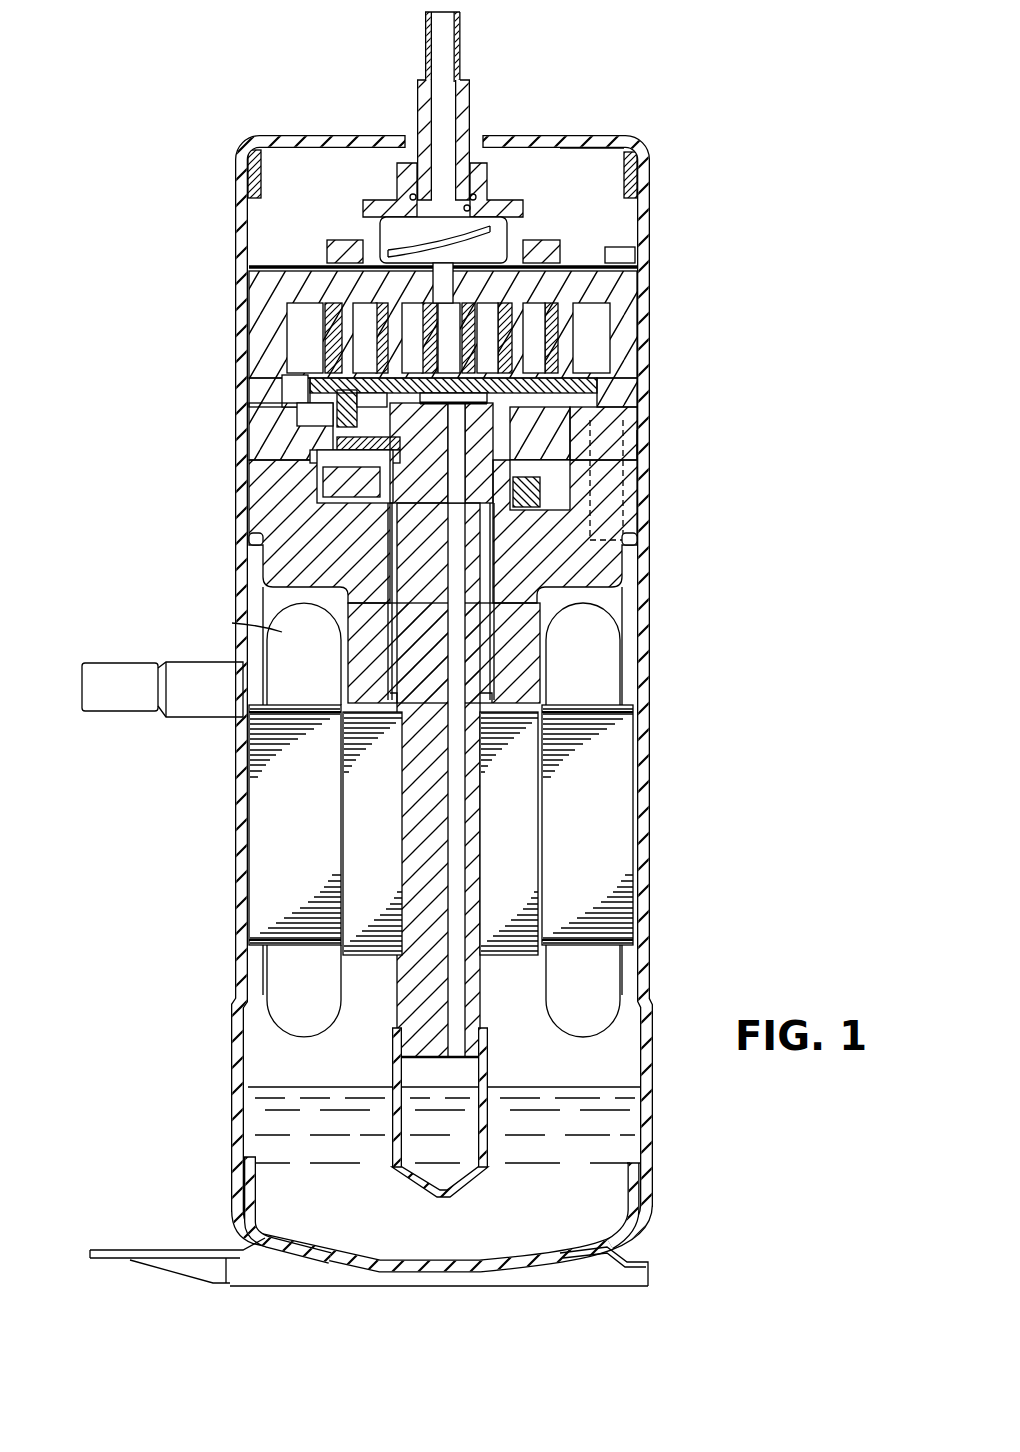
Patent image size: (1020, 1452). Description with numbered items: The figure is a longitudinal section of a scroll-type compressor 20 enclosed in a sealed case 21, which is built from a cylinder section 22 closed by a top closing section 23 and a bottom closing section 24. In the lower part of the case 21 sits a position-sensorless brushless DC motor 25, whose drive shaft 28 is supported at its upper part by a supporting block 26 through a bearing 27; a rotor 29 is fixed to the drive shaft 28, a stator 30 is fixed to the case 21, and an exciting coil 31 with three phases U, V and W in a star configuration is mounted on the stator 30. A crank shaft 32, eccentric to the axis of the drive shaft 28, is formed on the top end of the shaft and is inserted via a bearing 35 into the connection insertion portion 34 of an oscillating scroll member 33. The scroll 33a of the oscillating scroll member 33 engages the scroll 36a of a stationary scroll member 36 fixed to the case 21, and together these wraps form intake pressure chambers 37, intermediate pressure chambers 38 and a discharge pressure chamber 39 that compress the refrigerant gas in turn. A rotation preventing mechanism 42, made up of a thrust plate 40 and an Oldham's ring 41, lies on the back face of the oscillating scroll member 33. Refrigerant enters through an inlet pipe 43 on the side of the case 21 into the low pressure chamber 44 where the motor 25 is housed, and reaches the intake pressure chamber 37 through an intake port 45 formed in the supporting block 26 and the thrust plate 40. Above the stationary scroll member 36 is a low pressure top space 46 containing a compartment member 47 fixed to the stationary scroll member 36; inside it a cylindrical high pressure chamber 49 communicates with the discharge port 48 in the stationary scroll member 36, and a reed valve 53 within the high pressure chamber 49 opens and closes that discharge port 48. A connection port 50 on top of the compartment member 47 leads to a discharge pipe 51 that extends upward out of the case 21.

The compressor 20 is at (157, 195).
The sealed case 21 is at (236, 502).
The cylinder section 22 is at (243, 560).
The top closing section 23 is at (262, 137).
The bottom closing section 24 is at (240, 1222).
The brushless DC motor 25 is at (240, 846).
The supporting block 26 is at (300, 470).
The bearing 27 is at (390, 545).
The drive shaft 28 is at (407, 985).
The rotor 29 is at (280, 905).
The stator 30 is at (262, 990).
The exciting coil 31 is at (262, 765).
The crank shaft 32 is at (432, 448).
The oscillating scroll member 33 is at (620, 388).
The scroll 33a is at (618, 353).
The connection insertion portion 34 is at (338, 425).
The bearing 35 is at (470, 505).
The stationary scroll member 36 is at (620, 283).
The scroll 36a is at (620, 305).
The intake pressure chamber 37 is at (318, 320).
The intermediate pressure chamber 38 is at (365, 320).
The discharge pressure chamber 39 is at (449, 320).
The thrust plate 40 is at (642, 450).
The Oldham's ring 41 is at (637, 420).
The rotation preventing mechanism 42 is at (650, 445).
The inlet pipe 43 is at (108, 660).
The low pressure chamber 44 is at (625, 604).
The intake port 45 is at (632, 498).
The low pressure top space 46 is at (608, 175).
The compartment member 47 is at (512, 228).
The discharge port 48 is at (345, 265).
The high pressure chamber 49 is at (507, 238).
The connection port 50 is at (472, 202).
The discharge pipe 51 is at (462, 60).
The reed valve 53 is at (372, 232).